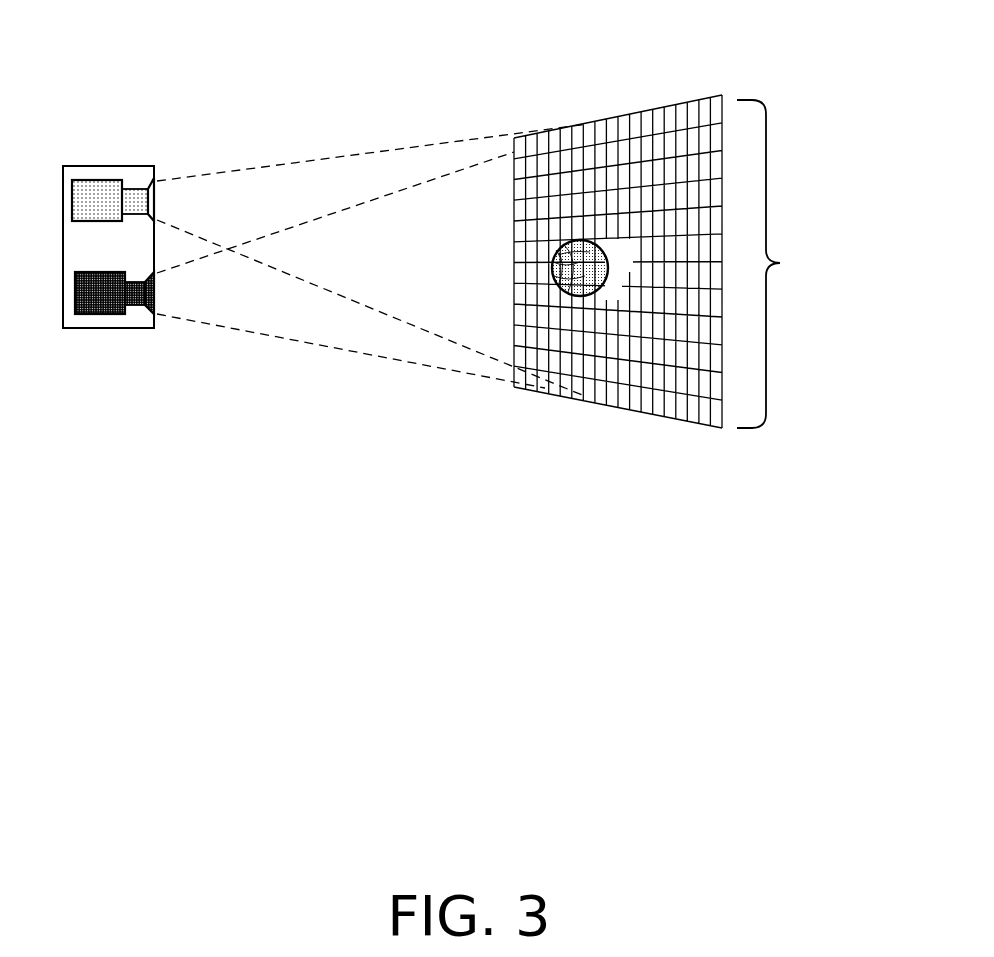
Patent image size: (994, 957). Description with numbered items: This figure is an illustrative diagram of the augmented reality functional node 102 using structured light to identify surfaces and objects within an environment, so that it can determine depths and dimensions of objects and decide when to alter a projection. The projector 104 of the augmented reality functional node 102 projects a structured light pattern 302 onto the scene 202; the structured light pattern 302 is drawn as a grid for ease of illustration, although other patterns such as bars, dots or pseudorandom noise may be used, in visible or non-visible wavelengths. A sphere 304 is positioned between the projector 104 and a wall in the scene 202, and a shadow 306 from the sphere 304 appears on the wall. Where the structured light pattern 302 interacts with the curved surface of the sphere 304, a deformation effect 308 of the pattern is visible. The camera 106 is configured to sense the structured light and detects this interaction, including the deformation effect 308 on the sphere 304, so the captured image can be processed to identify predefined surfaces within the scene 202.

The augmented reality functional node 102 is at (92, 330).
The projector 104 is at (98, 195).
The camera 106 is at (112, 307).
The scene 202 is at (676, 261).
The structured light pattern 302 is at (516, 155).
The sphere 304 is at (573, 242).
The shadow 306 is at (622, 257).
The deformation effect 308 is at (558, 287).